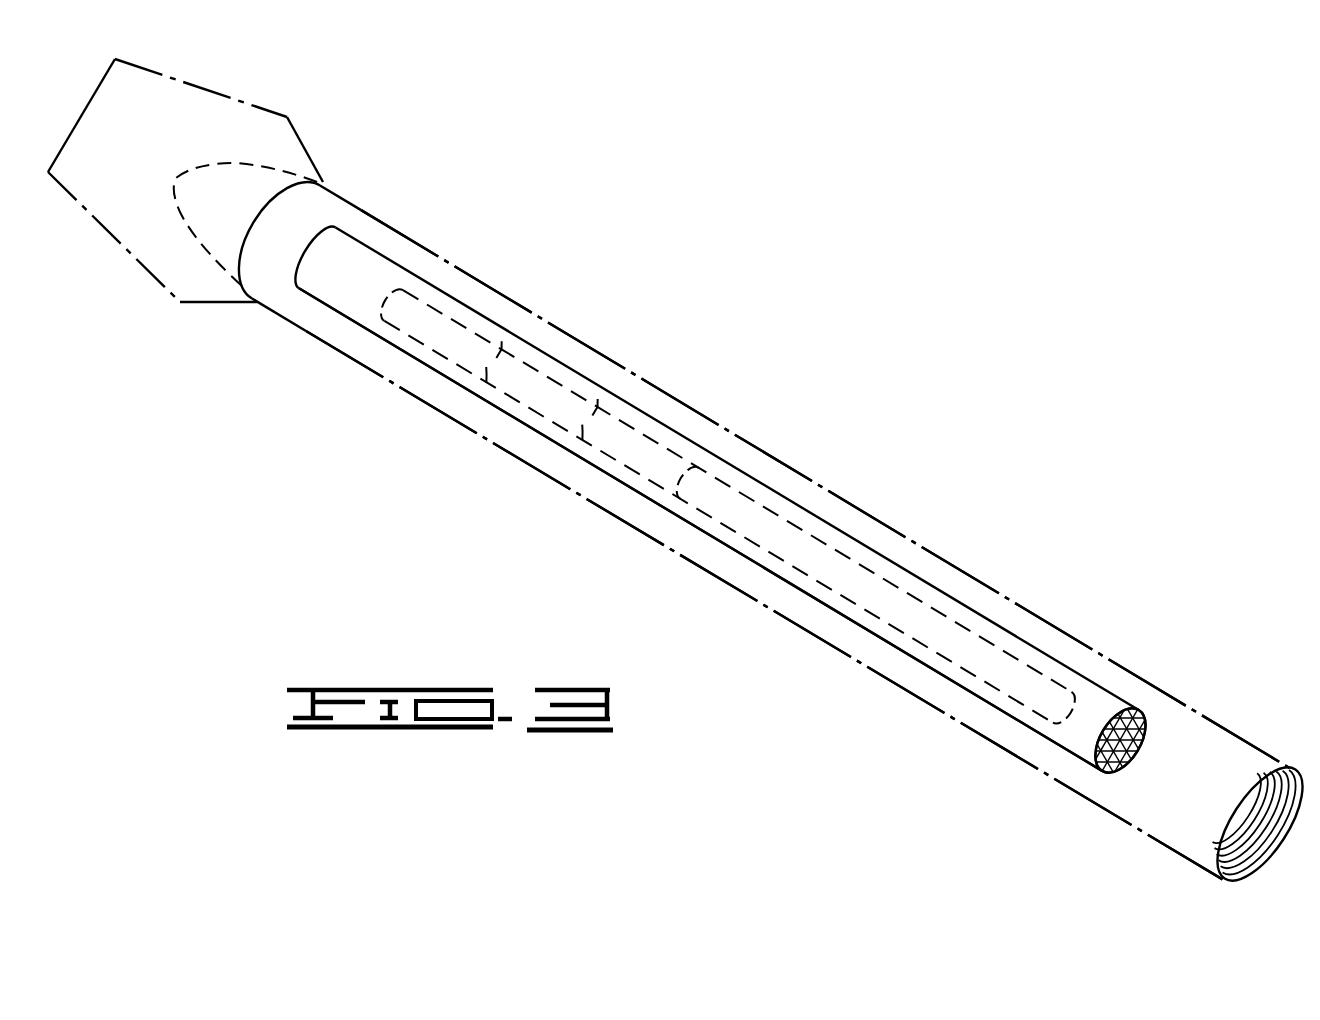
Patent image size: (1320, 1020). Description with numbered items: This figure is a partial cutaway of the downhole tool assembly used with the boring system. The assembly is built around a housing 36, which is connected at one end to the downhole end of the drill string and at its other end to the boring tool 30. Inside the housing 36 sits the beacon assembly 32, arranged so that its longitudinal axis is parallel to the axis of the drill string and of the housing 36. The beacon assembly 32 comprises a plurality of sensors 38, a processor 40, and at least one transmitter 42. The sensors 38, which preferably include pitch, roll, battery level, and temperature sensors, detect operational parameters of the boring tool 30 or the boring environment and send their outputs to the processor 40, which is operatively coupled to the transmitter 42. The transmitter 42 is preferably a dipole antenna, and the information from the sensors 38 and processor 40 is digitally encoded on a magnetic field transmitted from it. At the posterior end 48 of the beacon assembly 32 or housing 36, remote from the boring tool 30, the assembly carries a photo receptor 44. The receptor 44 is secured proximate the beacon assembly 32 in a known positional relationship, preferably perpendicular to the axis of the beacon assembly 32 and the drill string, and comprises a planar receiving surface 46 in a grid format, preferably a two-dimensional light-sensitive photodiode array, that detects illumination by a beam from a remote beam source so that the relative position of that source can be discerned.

The boring tool 30 is at (266, 122).
The beacon assembly 32 is at (663, 421).
The housing 36 is at (712, 572).
The plurality of sensors 38 is at (437, 302).
The processor 40 is at (587, 491).
The transmitter 42 is at (793, 468).
The photo receptor 44 is at (1121, 703).
The receiving surface 46 is at (1143, 712).
The posterior end 48 is at (965, 688).